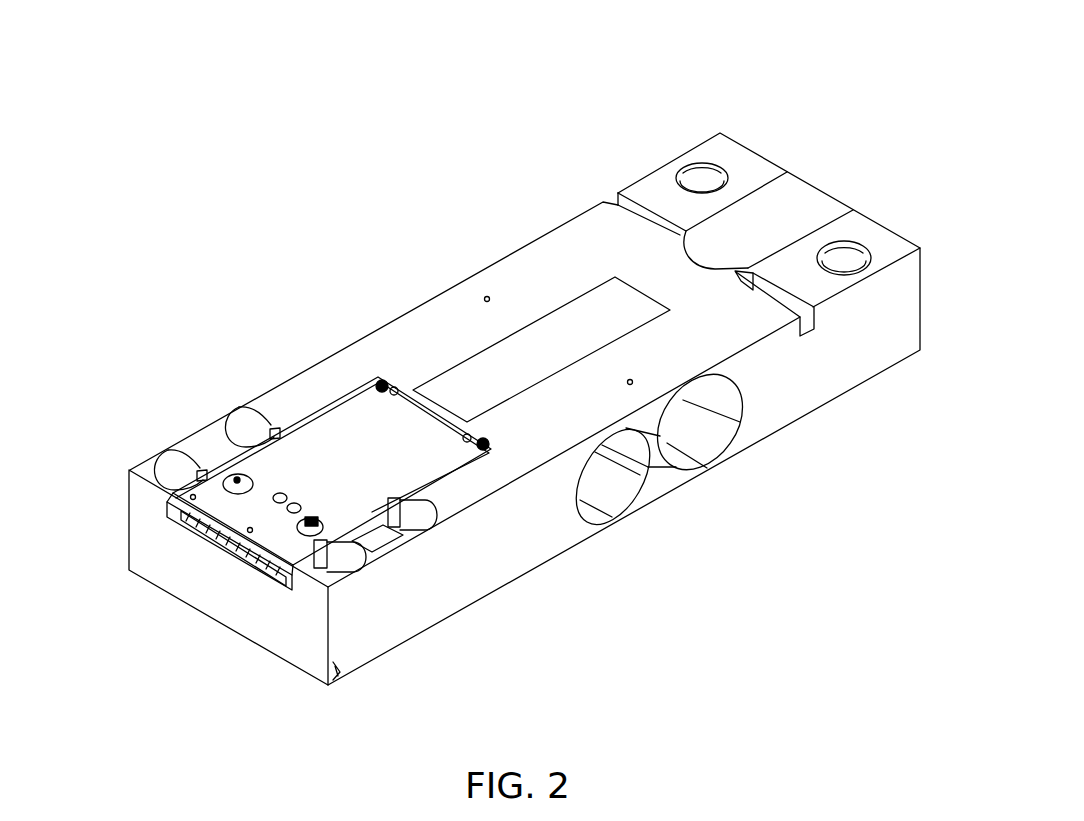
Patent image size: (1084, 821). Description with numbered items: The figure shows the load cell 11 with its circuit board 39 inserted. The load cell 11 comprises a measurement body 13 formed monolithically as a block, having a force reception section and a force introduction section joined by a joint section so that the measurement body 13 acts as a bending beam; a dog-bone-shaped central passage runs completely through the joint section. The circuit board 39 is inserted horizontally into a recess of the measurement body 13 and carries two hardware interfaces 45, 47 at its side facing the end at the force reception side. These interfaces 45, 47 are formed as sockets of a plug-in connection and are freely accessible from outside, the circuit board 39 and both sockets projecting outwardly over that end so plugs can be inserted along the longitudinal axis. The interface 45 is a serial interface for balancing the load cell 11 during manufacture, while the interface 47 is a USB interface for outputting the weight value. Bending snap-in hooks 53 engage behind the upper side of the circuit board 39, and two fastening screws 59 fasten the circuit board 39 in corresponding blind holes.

The load cell 11 is at (297, 140).
The measurement body 13 is at (518, 262).
The circuit board 39 is at (324, 428).
The hardware interface 45 is at (201, 539).
The hardware interface 47 is at (258, 578).
The bending snap-in hooks 53 is at (200, 472).
The fastening screws 59 is at (237, 478).